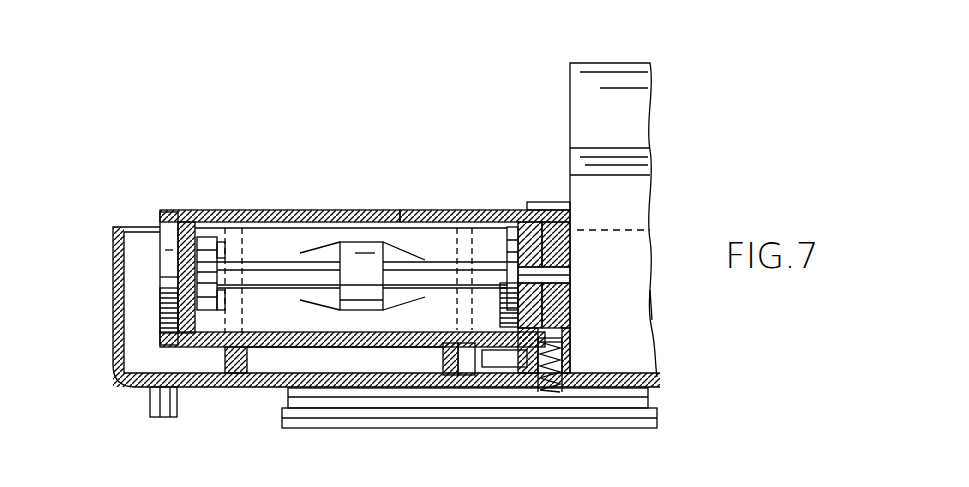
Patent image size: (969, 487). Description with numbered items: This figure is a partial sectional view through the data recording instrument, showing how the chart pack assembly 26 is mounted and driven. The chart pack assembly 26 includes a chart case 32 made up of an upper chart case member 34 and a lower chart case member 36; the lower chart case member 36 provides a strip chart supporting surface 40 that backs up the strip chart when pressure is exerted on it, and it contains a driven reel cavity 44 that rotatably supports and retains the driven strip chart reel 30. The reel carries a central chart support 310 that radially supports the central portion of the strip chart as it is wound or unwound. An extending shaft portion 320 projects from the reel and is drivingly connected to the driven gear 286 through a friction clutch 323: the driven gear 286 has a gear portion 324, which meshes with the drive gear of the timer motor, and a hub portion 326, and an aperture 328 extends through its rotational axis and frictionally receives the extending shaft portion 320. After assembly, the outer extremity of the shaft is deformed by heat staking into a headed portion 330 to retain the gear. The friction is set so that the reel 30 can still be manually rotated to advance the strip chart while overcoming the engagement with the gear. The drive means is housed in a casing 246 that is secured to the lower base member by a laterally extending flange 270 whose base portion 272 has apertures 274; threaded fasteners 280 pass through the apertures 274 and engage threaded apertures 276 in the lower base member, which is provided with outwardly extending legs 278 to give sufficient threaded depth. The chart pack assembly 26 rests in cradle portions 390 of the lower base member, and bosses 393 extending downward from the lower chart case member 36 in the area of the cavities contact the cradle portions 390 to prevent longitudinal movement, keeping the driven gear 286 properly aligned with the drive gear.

The casing 246 is at (650, 63).
The chart pack assembly 26 is at (224, 210).
The chart case 32 is at (296, 210).
The upper chart case member 34 is at (348, 210).
The strip chart supporting surface 40 is at (380, 224).
The gear portion 324 is at (553, 203).
The friction clutch 323 is at (577, 232).
The extending shaft portion 320 is at (520, 268).
The headed portion 330 is at (565, 256).
The aperture 328 is at (547, 294).
The hub portion 326 is at (540, 333).
The driven gear 286 is at (652, 306).
The base portion 272 is at (560, 360).
The outwardly extending legs 278 is at (562, 382).
The driven strip chart reel 30 is at (160, 277).
The driven reel cavity 44 is at (200, 318).
The lower chart case member 36 is at (193, 347).
The bosses 393 is at (447, 350).
The central chart support 310 is at (368, 302).
The cradle portion 390 is at (223, 347).
The apertures 274 is at (537, 364).
The laterally extending flange 270 is at (530, 368).
The threaded apertures 276 is at (548, 375).
The threaded fasteners 280 is at (565, 380).